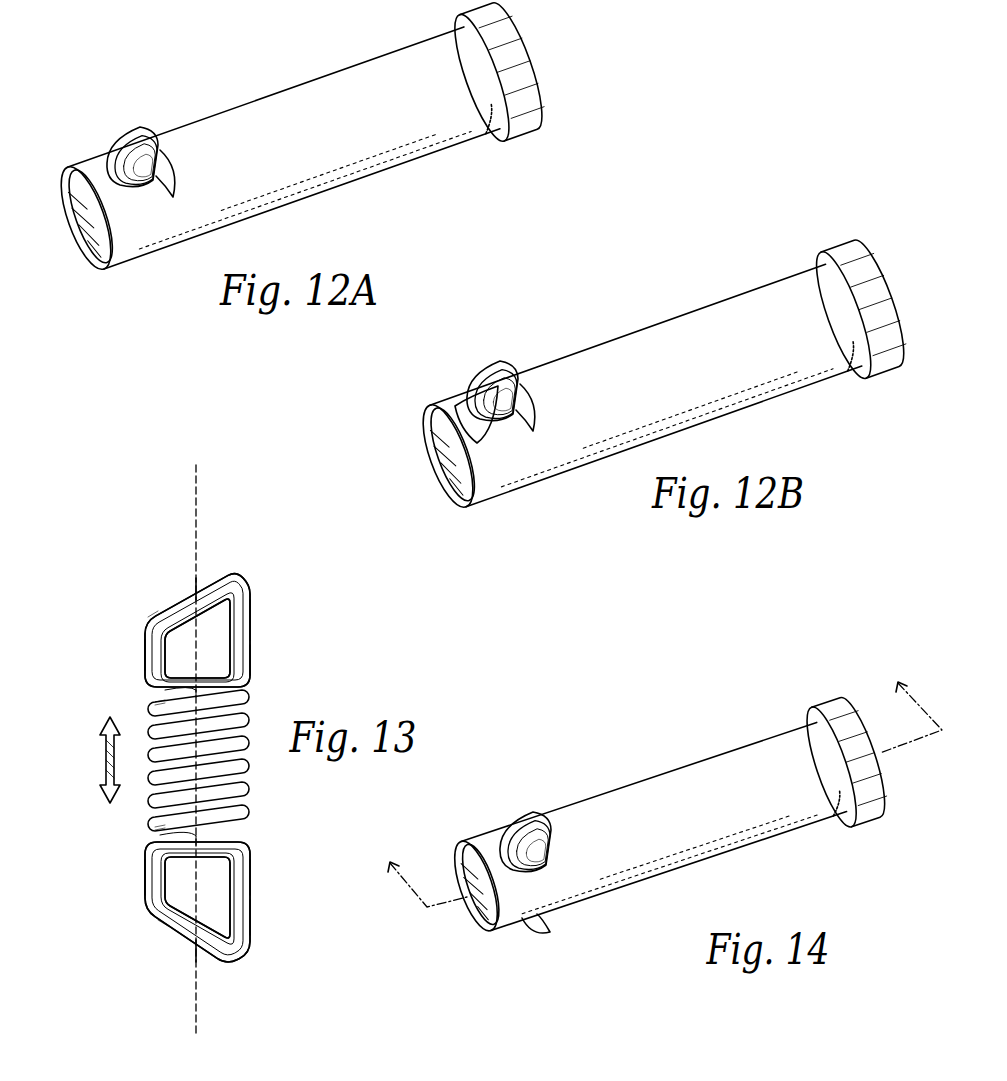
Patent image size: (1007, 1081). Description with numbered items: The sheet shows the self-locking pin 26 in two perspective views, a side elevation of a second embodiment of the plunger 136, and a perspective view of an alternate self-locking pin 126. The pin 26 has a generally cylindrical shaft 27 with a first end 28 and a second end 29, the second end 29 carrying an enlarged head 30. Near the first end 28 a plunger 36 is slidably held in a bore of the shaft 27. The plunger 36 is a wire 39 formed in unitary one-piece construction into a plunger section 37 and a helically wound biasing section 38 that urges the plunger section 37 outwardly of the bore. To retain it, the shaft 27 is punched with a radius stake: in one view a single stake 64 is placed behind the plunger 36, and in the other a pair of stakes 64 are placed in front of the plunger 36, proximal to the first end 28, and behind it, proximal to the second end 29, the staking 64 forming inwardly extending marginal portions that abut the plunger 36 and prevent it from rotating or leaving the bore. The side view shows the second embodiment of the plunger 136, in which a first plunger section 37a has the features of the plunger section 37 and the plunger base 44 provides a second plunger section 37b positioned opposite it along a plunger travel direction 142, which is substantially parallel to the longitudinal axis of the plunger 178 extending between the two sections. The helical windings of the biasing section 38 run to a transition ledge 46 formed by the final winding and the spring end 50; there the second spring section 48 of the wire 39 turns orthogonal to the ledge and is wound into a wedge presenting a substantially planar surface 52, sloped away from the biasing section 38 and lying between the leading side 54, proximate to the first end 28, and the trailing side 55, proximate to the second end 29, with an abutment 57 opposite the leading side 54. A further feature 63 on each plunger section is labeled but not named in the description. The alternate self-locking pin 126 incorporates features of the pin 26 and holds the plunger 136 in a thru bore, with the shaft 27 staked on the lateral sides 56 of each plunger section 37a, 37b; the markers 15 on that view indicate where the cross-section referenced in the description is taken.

In FIG. 12A, the self-locking pin 26 is at (248, 83).
In FIG. 12B, the self-locking pin 26 is at (632, 312).
In FIG. 14, the shaft 27 is at (620, 805).
In FIG. 12A, the first end 28 is at (75, 236).
In FIG. 12B, the first end 28 is at (422, 470).
In FIG. 14, the first end 28 is at (468, 905).
In FIG. 12A, the second end 29 is at (487, 112).
In FIG. 12B, the second end 29 is at (818, 283).
In FIG. 14, the second end 29 is at (818, 822).
In FIG. 14, the enlarged head 30 is at (857, 793).
In FIG. 12A, the plunger 36 is at (118, 140).
In FIG. 12B, the plunger 36 is at (492, 366).
In FIG. 13, the plunger section 37 is at (165, 605).
In FIG. 13, the first plunger section 37a is at (182, 600).
In FIG. 13, the second plunger section 37b is at (190, 950).
In FIG. 13, the biasing section 38 is at (236, 764).
In FIG. 13, the wire 39 is at (255, 715).
In FIG. 13, the plunger base 44 is at (140, 905).
In FIG. 13, the transition ledge 46 is at (160, 765).
In FIG. 13, the second spring section 48 is at (199, 585).
In FIG. 13, the spring end 50 is at (162, 702).
In FIG. 13, the planar surface 52 is at (157, 612).
In FIG. 13, the plunger section leading side 54 is at (142, 650).
In FIG. 13, the plunger section trailing side 55 is at (253, 628).
In FIG. 14, the lateral sides 56 is at (555, 822).
In FIG. 13, the abutment 57 is at (253, 661).
In FIG. 13, the inner edge 63 is at (148, 621).
In FIG. 12A, the staking 64 is at (168, 152).
In FIG. 12B, the staking 64 is at (527, 372).
In FIG. 14, the self-locking pin 126 is at (659, 817).
In FIG. 13, the plunger 136 is at (180, 756).
In FIG. 13, the plunger travel direction 142 is at (100, 776).
In FIG. 13, the longitudinal axis of the plunger 178 is at (194, 493).
In FIG. 14, the section line 15 is at (676, 727).